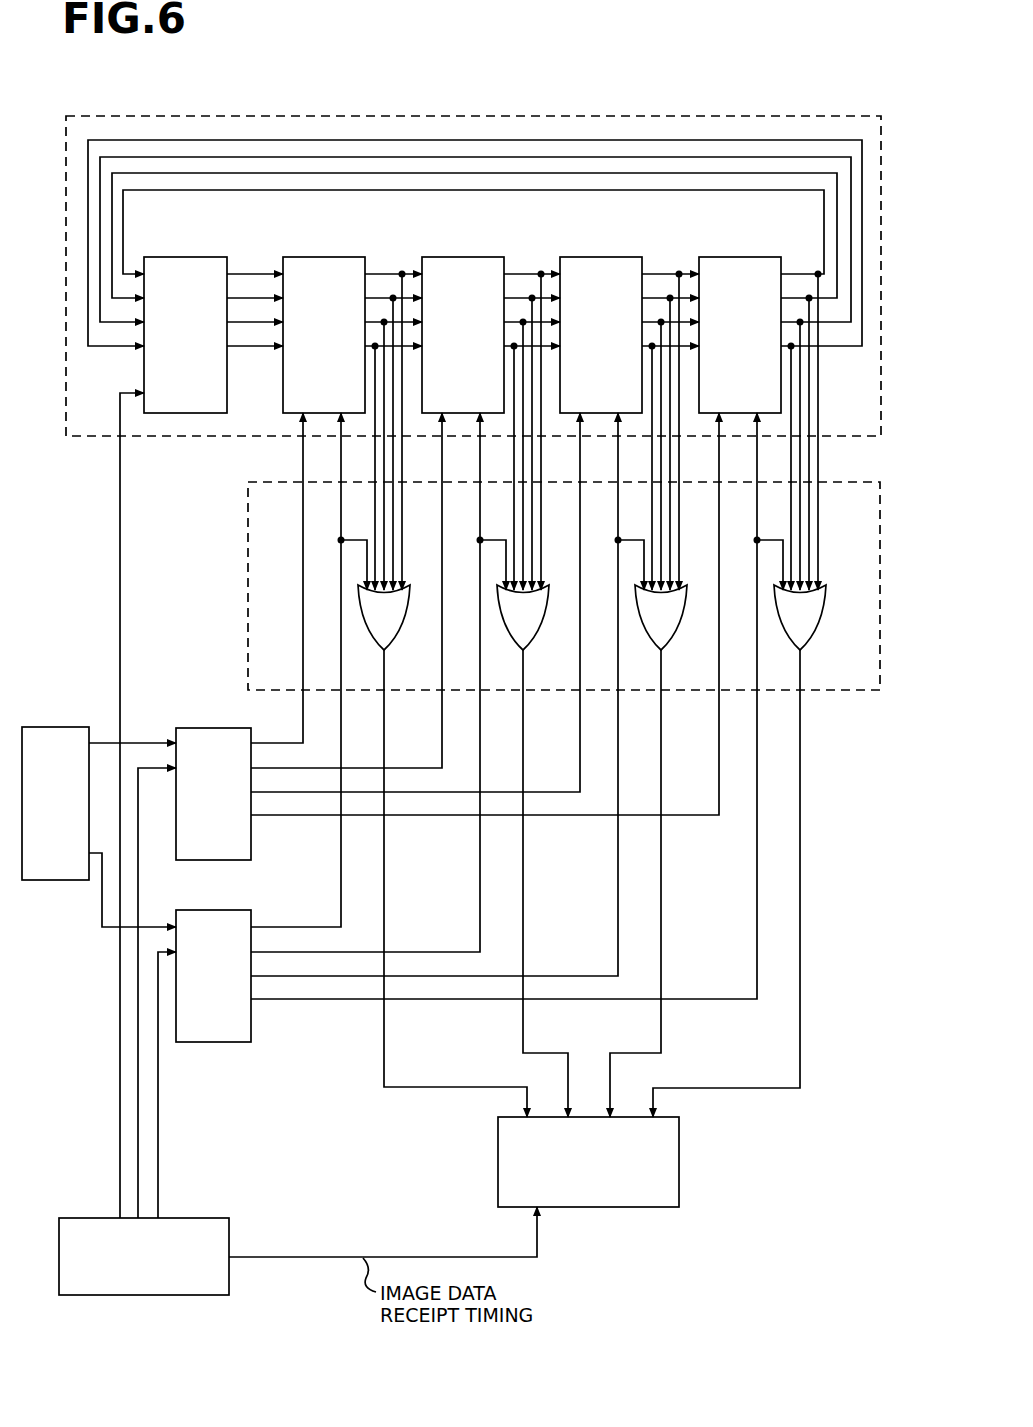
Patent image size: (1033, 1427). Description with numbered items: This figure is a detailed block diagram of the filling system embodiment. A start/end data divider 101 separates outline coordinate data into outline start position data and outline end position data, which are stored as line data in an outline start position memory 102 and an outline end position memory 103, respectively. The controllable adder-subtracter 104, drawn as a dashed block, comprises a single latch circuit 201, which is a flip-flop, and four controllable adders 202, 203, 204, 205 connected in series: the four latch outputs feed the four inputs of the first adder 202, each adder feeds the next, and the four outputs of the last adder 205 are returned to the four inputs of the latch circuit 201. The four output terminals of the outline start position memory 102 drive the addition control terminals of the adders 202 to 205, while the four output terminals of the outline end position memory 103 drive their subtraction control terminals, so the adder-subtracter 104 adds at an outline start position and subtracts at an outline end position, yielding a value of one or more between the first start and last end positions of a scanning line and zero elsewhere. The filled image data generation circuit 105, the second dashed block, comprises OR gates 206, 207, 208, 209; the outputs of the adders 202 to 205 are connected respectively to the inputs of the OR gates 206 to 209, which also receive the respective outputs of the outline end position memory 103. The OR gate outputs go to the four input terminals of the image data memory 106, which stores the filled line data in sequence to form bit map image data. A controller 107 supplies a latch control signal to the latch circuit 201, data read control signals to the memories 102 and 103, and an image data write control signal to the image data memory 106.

The start/end data divider 101 is at (55, 882).
The outline start position memory 102 is at (228, 862).
The outline end position memory 103 is at (230, 1043).
The controllable adder-subtracter 104 is at (742, 116).
The filled image data generation circuit 105 is at (824, 692).
The image data memory 106 is at (679, 1152).
The controller 107 is at (193, 1218).
The latch circuit 201 is at (171, 257).
The controllable adder 202 is at (310, 257).
The controllable adder 203 is at (449, 257).
The controllable adder 204 is at (587, 257).
The controllable adder 205 is at (726, 257).
The OR gate 206 is at (400, 637).
The OR gate 207 is at (539, 637).
The OR gate 208 is at (677, 637).
The OR gate 209 is at (816, 637).